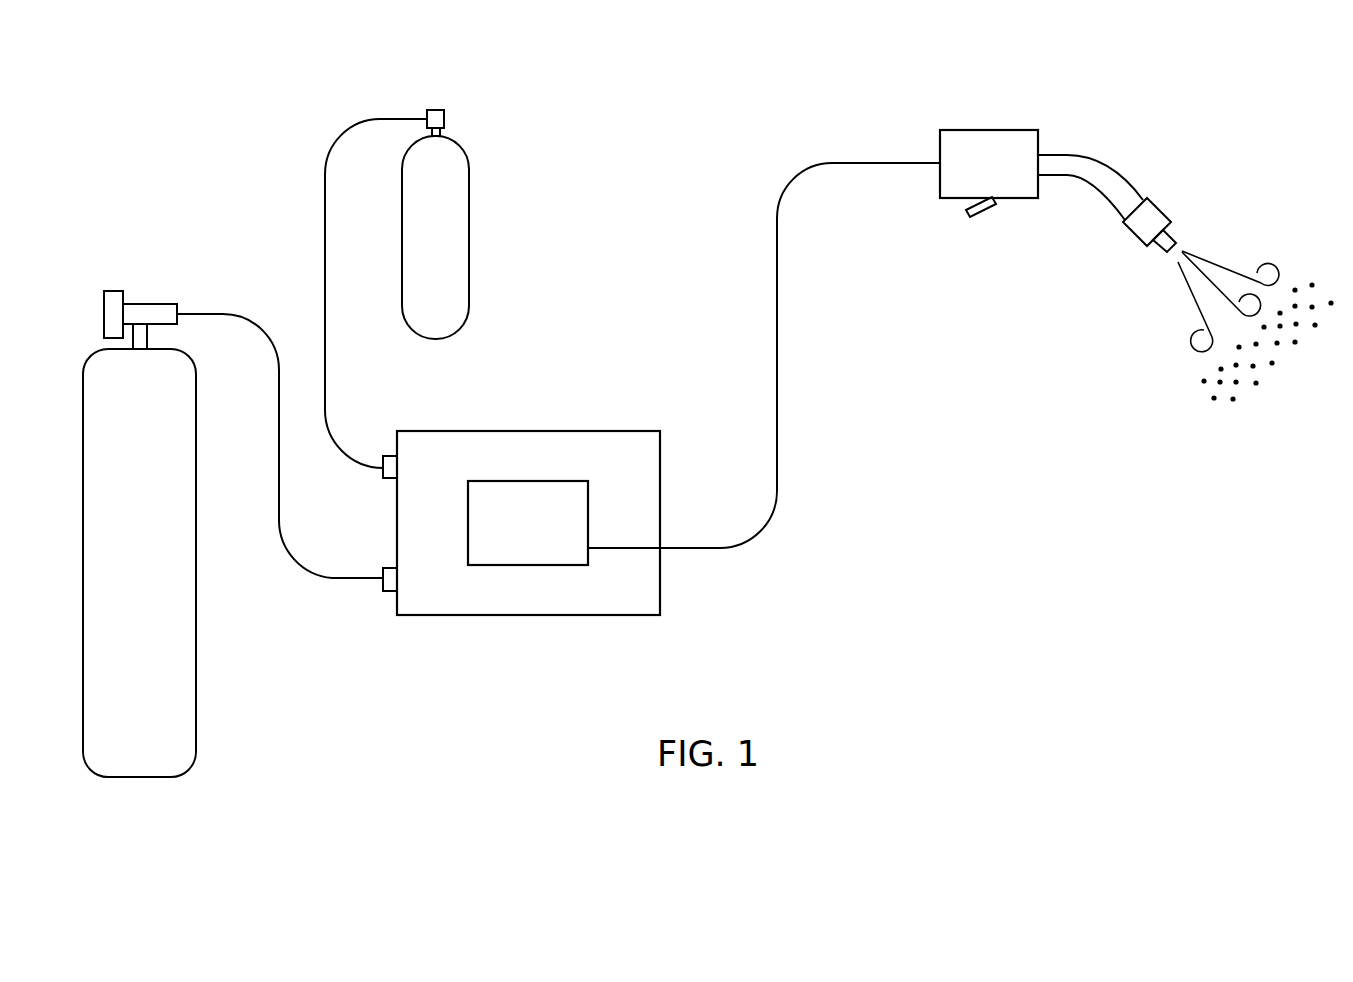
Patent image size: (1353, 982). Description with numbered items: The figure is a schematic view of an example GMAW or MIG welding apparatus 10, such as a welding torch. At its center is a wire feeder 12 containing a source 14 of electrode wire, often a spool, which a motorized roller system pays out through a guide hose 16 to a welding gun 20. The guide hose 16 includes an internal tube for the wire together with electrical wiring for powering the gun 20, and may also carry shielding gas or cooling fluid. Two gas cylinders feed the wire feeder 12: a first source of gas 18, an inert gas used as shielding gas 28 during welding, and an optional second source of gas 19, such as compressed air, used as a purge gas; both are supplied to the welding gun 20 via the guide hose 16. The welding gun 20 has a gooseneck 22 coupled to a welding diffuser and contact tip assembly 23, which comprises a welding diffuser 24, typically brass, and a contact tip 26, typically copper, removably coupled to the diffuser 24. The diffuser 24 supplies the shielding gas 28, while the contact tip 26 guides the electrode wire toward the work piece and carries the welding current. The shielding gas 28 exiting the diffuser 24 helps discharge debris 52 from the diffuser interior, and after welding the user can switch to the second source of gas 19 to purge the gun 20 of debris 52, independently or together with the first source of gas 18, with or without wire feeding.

The welding apparatus 10 is at (182, 145).
The wire feeder 12 is at (565, 445).
The source of electrode wire 14 is at (533, 551).
The guide hose 16 is at (777, 421).
The first source of gas 18 is at (183, 719).
The second source of gas 19 is at (458, 241).
The welding gun 20 is at (990, 135).
The gooseneck 22 is at (1115, 196).
The welding diffuser and contact tip assembly 23 is at (1190, 232).
The welding diffuser 24 is at (1157, 213).
The contact tip 26 is at (1160, 252).
The shielding gas 28 is at (1182, 313).
The debris 52 is at (1203, 398).